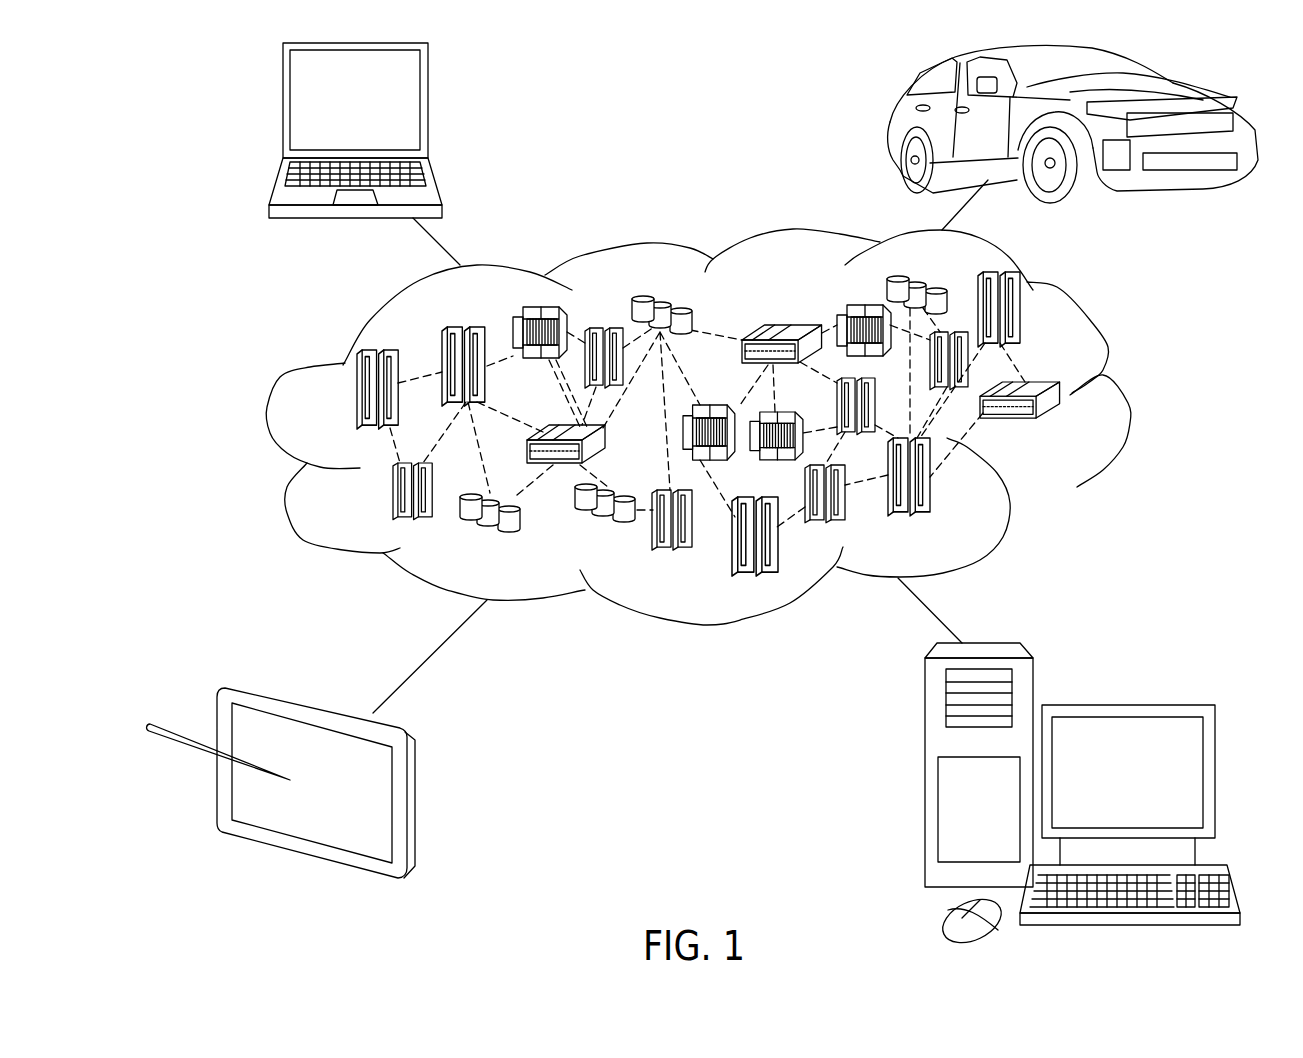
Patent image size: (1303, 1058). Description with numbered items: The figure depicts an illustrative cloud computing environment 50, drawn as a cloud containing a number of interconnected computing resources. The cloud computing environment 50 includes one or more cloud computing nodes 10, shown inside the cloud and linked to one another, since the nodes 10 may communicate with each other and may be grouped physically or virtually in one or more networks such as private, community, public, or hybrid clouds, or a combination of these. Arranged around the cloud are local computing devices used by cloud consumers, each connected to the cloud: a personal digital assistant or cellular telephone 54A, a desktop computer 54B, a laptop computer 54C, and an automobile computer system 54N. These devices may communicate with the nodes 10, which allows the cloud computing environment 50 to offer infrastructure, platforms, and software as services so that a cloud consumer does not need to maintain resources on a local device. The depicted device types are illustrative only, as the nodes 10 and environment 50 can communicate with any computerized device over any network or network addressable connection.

The cloud computing nodes 10 is at (1072, 433).
The cloud computing environment 50 is at (1123, 400).
The personal digital assistant (PDA) or cellular telephone 54A is at (415, 803).
The desktop computer 54B is at (1125, 705).
The laptop computer 54C is at (428, 110).
The automobile computer system 54N is at (892, 126).